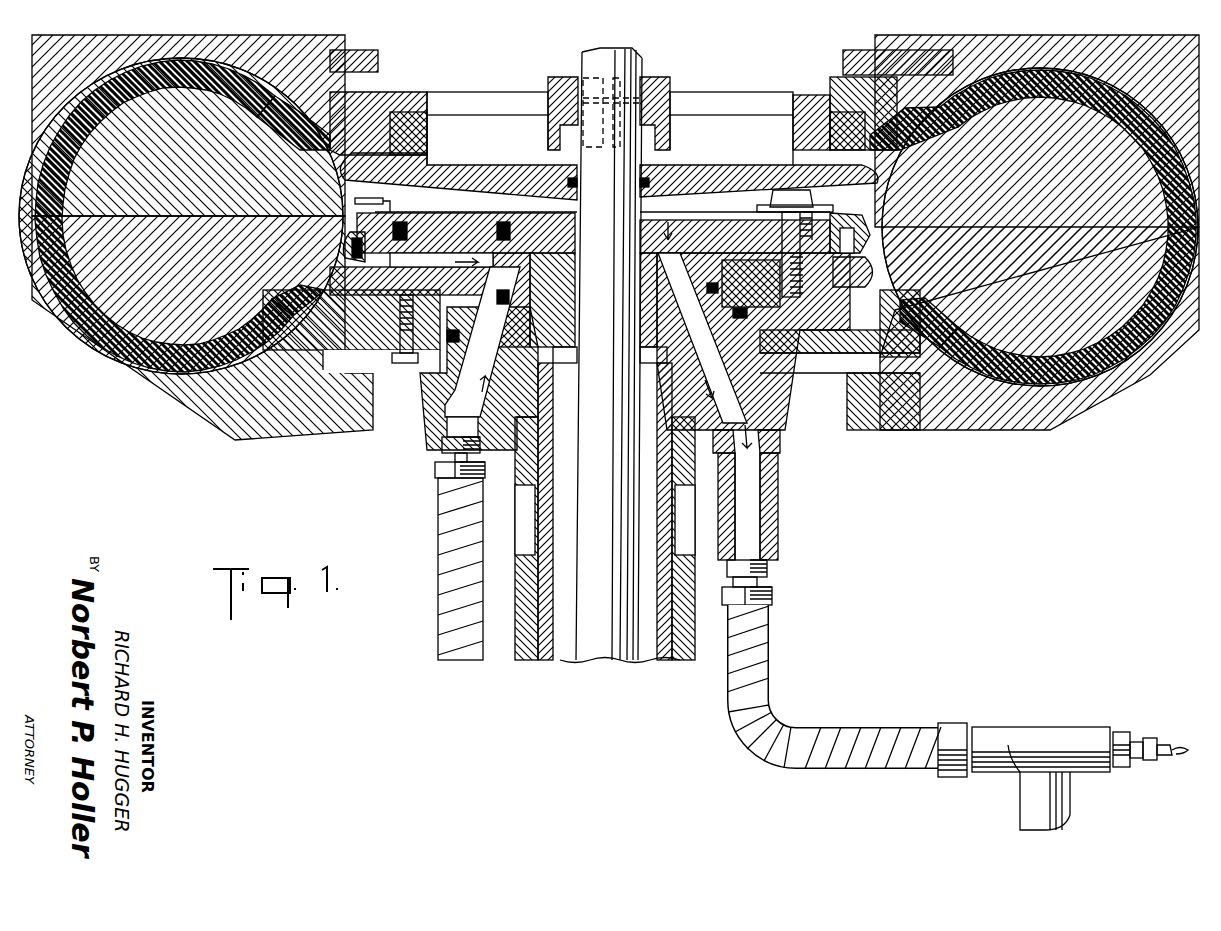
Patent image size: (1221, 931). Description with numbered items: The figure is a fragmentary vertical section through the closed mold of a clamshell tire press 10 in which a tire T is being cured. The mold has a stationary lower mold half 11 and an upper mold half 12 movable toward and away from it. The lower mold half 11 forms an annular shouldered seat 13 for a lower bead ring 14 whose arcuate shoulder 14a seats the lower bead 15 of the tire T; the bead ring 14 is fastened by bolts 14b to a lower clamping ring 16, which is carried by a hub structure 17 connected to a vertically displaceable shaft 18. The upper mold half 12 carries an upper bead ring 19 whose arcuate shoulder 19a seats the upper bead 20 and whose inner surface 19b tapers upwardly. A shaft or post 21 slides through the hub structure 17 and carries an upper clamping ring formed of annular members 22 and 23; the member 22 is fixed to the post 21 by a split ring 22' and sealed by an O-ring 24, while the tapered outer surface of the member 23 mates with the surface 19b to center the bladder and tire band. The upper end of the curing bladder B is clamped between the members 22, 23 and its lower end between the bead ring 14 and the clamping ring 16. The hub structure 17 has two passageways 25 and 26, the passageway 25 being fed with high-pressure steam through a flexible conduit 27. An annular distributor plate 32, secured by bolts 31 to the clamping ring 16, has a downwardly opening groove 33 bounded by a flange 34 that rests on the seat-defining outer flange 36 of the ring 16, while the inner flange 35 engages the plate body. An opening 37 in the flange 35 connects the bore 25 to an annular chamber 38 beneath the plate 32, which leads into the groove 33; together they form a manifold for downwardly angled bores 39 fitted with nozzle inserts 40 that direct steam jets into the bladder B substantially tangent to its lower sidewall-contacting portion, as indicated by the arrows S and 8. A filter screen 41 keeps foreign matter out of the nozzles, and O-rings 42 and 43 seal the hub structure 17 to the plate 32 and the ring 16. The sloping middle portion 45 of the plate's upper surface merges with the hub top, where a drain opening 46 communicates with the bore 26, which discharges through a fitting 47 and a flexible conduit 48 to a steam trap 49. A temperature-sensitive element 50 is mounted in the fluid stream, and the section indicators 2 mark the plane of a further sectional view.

The tire T is at (1150, 350).
The curing bladder B is at (1165, 222).
The arrows S is at (885, 262).
The section line 2 is at (897, 208).
The air flow arrow 8 is at (318, 257).
The tire press 10 is at (852, 500).
The lower mold half 11 is at (1040, 390).
The upper mold half 12 is at (843, 60).
The annular shouldered seat 13 is at (950, 365).
The lower bead ring 14 is at (830, 373).
The arcuate shoulder 14a is at (945, 300).
The bolts 14b is at (405, 363).
The lower bead 15 is at (290, 318).
The lower clamping ring 16 is at (795, 355).
The hub structure 17 is at (780, 420).
The vertically displaceable shaft 18 is at (550, 655).
The upper bead ring 19 is at (330, 80).
The arcuate shoulder 19a is at (275, 150).
The inner surface 19b is at (845, 113).
The upper bead 20 is at (948, 140).
The shaft or post 21 is at (615, 655).
The clamping member 22 is at (609, 167).
The split ring 22' is at (610, 109).
The second clamping member 23 is at (427, 95).
The O-ring gasket 24 is at (660, 177).
The bore or passageway 25 is at (535, 308).
The bore or passageway 26 is at (700, 395).
The flexible conduit 27 is at (438, 516).
The bolts 31 is at (815, 196).
The annular plate 32 is at (432, 222).
The groove or channel 33 is at (859, 230).
The flange 34 is at (853, 272).
The inner flange 35 is at (743, 272).
The outer flange 36 is at (840, 323).
The opening 37 is at (467, 232).
The annular chamber 38 is at (411, 274).
The bores 39 is at (350, 232).
The nozzle-defining insert 40 is at (854, 240).
The annular filter screen 41 is at (405, 222).
The O-ring gasket 42 is at (503, 222).
The O-ring gasket 43 is at (479, 358).
The annular middle portion 45 is at (705, 222).
The drain opening 46 is at (626, 186).
The fitting 47 is at (778, 502).
The flexible conduit 48 is at (770, 675).
The steam trap 49 is at (1020, 775).
The temperature-sensitive element 50 is at (355, 200).